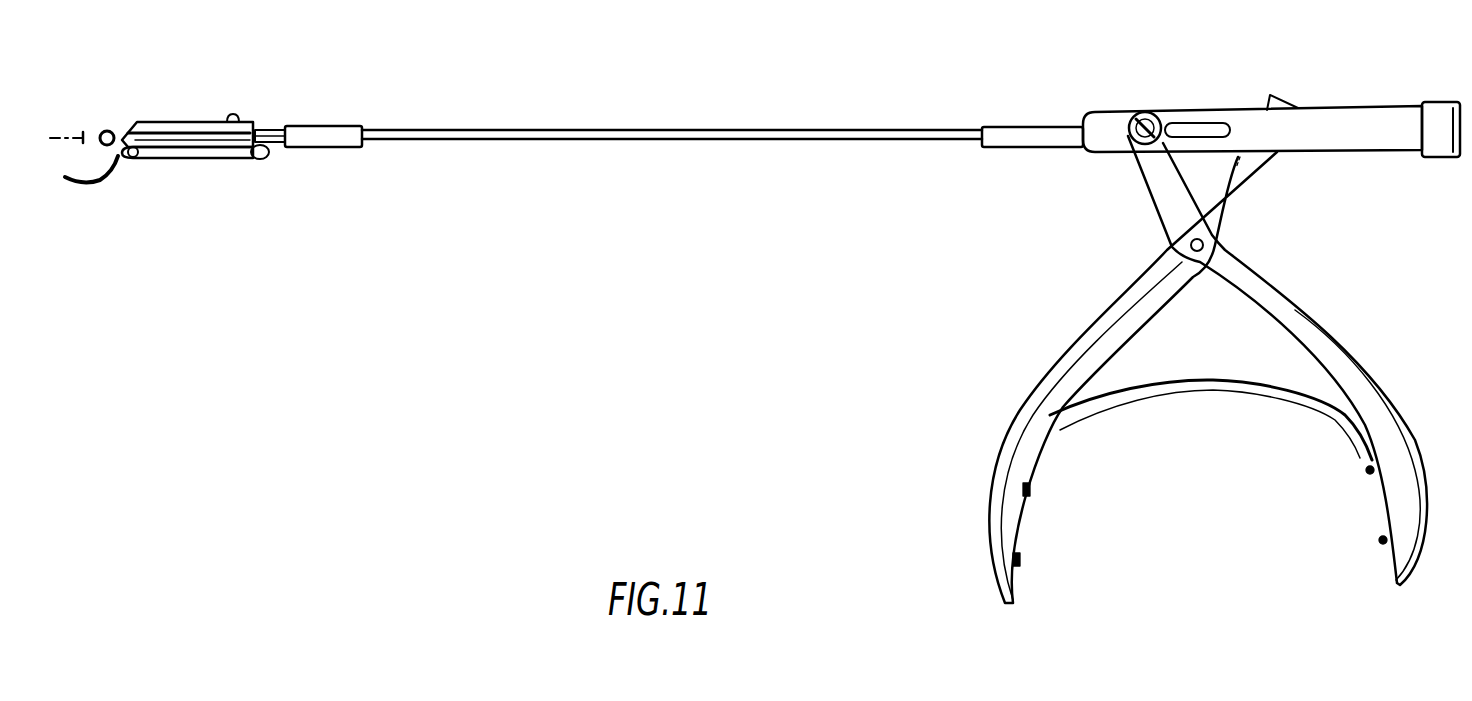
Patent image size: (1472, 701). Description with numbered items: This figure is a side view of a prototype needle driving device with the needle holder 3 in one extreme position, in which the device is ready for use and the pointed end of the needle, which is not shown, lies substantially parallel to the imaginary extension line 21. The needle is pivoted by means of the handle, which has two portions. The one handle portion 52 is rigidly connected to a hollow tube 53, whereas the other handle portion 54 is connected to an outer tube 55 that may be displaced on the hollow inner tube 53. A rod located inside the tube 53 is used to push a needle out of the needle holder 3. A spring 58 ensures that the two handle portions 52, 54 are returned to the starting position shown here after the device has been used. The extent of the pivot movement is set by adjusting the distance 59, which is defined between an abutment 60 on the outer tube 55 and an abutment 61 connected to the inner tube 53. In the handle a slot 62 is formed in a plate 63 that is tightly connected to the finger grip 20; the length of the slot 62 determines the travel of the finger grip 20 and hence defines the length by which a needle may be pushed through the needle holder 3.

The needle holder 3 is at (100, 186).
The imaginary extension line 21 is at (95, 113).
The abutment 61 is at (258, 120).
The distance 59 is at (268, 124).
The abutment 60 is at (286, 125).
The hollow tube 53 is at (280, 143).
The outer tube 55 is at (562, 133).
The slot 62 is at (1183, 130).
The plate 63 is at (1312, 123).
The finger grip 20 is at (1442, 143).
The handle portion 52 is at (1057, 347).
The handle portion 54 is at (1341, 335).
The spring 58 is at (1213, 370).